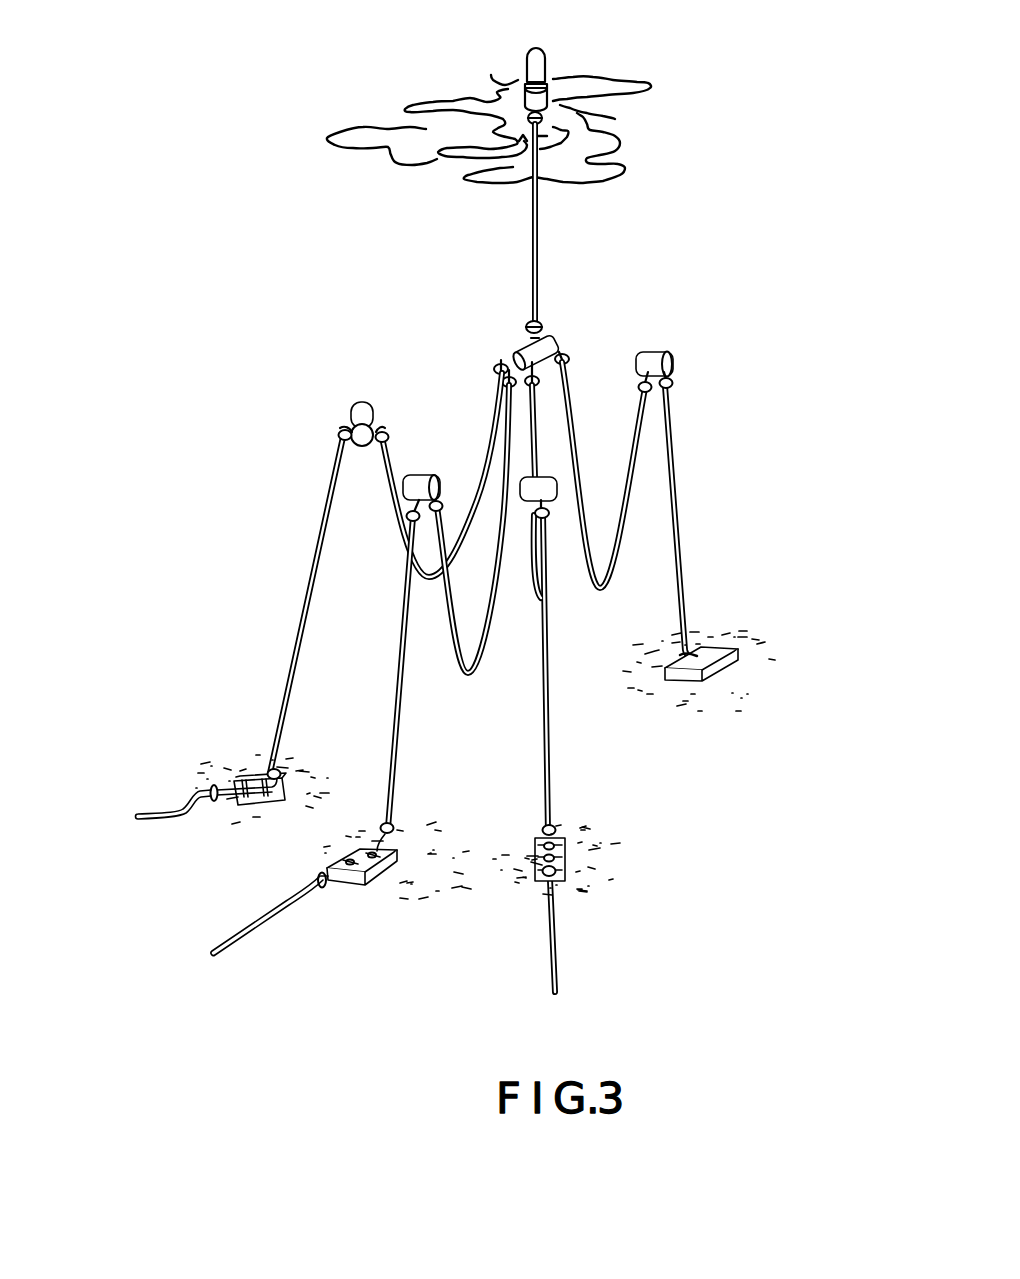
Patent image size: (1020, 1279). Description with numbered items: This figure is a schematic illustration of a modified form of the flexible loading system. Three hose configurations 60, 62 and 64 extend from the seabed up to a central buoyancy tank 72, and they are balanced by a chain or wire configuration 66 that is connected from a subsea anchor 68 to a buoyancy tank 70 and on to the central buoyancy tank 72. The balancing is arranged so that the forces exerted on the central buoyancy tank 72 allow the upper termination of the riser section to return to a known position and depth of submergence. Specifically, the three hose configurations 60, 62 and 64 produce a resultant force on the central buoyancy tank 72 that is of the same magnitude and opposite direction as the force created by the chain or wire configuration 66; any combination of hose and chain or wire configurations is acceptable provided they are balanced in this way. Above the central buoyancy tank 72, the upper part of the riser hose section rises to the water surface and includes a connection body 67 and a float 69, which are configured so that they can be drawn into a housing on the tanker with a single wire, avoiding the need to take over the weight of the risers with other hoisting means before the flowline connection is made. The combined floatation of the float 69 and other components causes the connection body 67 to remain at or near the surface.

The hose configuration 60 is at (301, 509).
The hose configuration 62 is at (470, 682).
The hose configuration 64 is at (565, 697).
The chain or wire configuration 66 is at (688, 458).
The connection body 67 is at (527, 62).
The subsea anchor 68 is at (708, 685).
The float 69 is at (585, 113).
The buoyancy tank 70 is at (666, 352).
The central buoyancy tank 72 is at (560, 345).